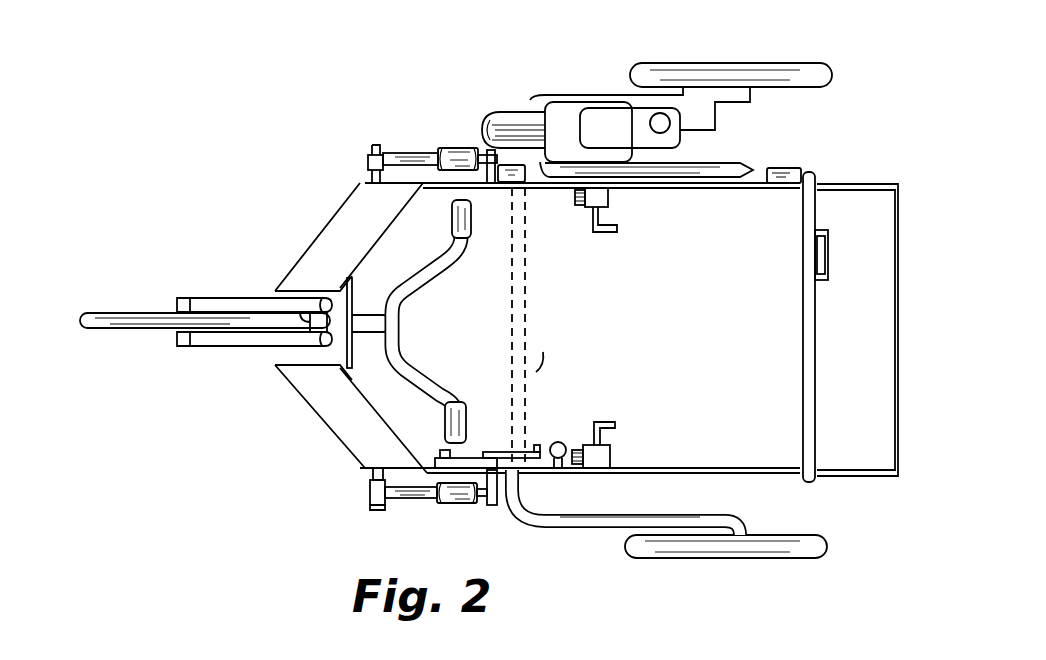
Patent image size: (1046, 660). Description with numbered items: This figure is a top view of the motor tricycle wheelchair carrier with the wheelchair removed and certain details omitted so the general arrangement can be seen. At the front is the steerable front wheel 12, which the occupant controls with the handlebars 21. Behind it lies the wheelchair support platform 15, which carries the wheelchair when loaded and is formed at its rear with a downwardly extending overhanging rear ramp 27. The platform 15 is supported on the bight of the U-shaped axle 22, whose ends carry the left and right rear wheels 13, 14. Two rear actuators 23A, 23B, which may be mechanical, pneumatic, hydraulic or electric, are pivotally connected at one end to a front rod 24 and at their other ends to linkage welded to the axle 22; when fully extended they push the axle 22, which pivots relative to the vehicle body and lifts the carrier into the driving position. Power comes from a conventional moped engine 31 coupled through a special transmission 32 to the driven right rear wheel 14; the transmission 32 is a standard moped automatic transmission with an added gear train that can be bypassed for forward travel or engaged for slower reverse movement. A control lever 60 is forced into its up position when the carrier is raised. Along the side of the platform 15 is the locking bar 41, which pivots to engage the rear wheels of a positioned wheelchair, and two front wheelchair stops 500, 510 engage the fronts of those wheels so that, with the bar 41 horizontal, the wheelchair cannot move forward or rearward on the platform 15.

The steerable front wheel 12 is at (148, 317).
The left rear wheel 13 is at (810, 550).
The right rear wheel 14 is at (792, 73).
The wheelchair support platform 15 is at (676, 328).
The handlebars 21 is at (430, 272).
The U-shaped axle 22 is at (550, 522).
The rear actuator 23A is at (463, 503).
The rear actuator 23B is at (440, 150).
The front rod 24 is at (381, 508).
The rear ramp 27 is at (866, 333).
The moped engine 31 is at (520, 118).
The special transmission 32 is at (703, 116).
The locking bar 41 is at (803, 374).
The control lever 60 is at (556, 462).
The front wheelchair stop 500 is at (593, 216).
The front wheelchair stop 510 is at (594, 420).